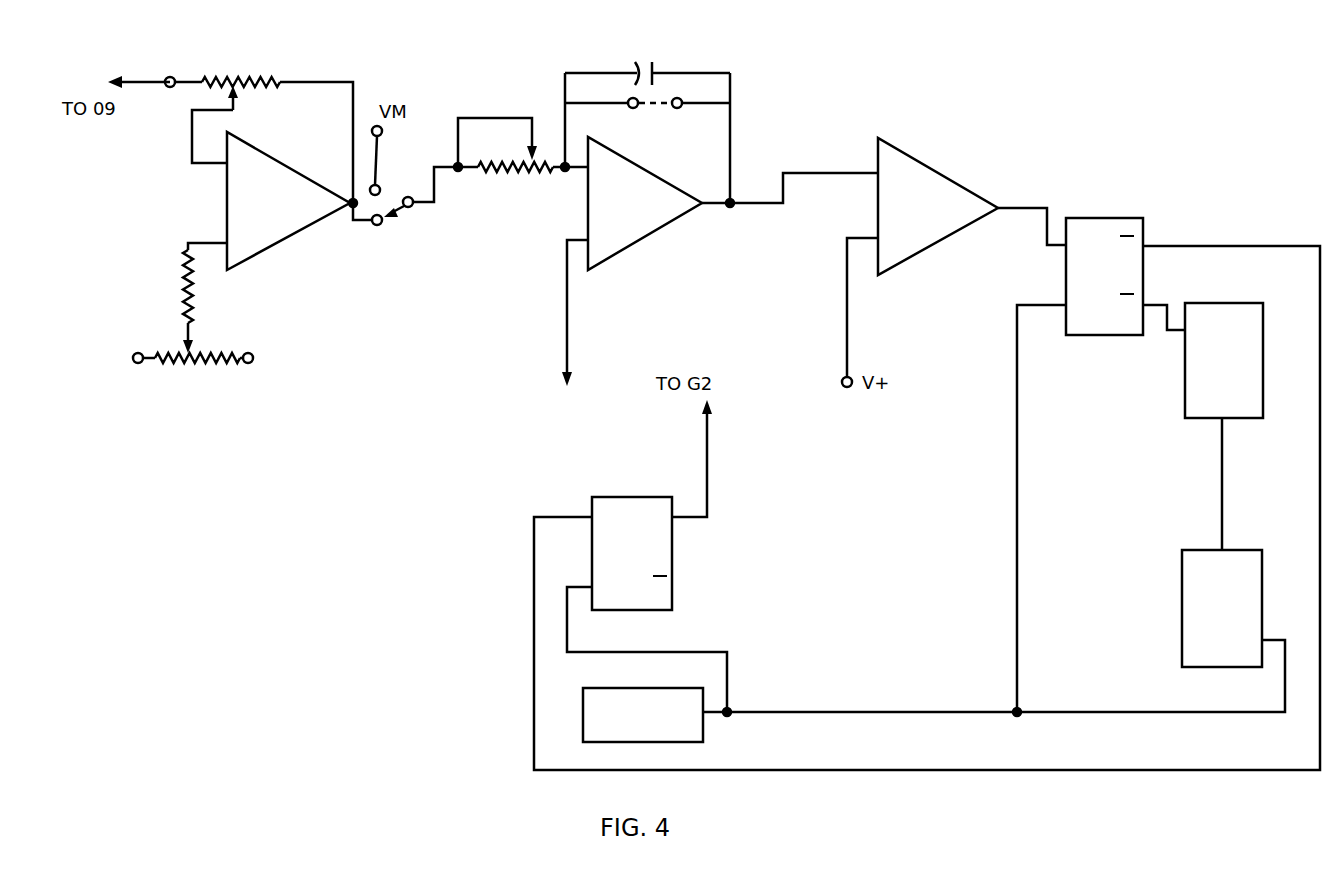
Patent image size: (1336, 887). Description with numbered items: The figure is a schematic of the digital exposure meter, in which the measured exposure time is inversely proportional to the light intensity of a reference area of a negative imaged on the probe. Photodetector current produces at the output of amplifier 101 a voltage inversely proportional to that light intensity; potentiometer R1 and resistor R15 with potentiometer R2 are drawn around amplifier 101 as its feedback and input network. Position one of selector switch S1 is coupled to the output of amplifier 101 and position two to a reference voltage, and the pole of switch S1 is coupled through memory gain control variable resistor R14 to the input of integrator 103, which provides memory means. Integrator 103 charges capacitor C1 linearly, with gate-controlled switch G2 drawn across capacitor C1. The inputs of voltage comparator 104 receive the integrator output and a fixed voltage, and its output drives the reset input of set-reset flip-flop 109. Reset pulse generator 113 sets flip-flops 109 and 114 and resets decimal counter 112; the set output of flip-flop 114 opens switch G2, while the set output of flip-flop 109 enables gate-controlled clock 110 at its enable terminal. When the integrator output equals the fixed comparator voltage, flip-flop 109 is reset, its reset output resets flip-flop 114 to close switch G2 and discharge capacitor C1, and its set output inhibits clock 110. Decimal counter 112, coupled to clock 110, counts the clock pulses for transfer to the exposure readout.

The amplifier 101 is at (288, 201).
The integrator 103 is at (645, 203).
The voltage comparator 104 is at (938, 206).
The set-reset flip-flop 109 is at (1104, 276).
The gate-controlled clock 110 is at (1224, 360).
The decimal counter 112 is at (1222, 608).
The reset pulse generator 113 is at (643, 715).
The set-reset flip-flop 114 is at (632, 553).
The potentiometer R1 is at (241, 81).
The potentiometer R2 is at (193, 372).
The resistor R15 is at (210, 298).
The variable resistor R14 is at (523, 161).
The selector switch S1 is at (396, 221).
The capacitor C1 is at (647, 61).
The gate-controlled switch G2 is at (647, 116).